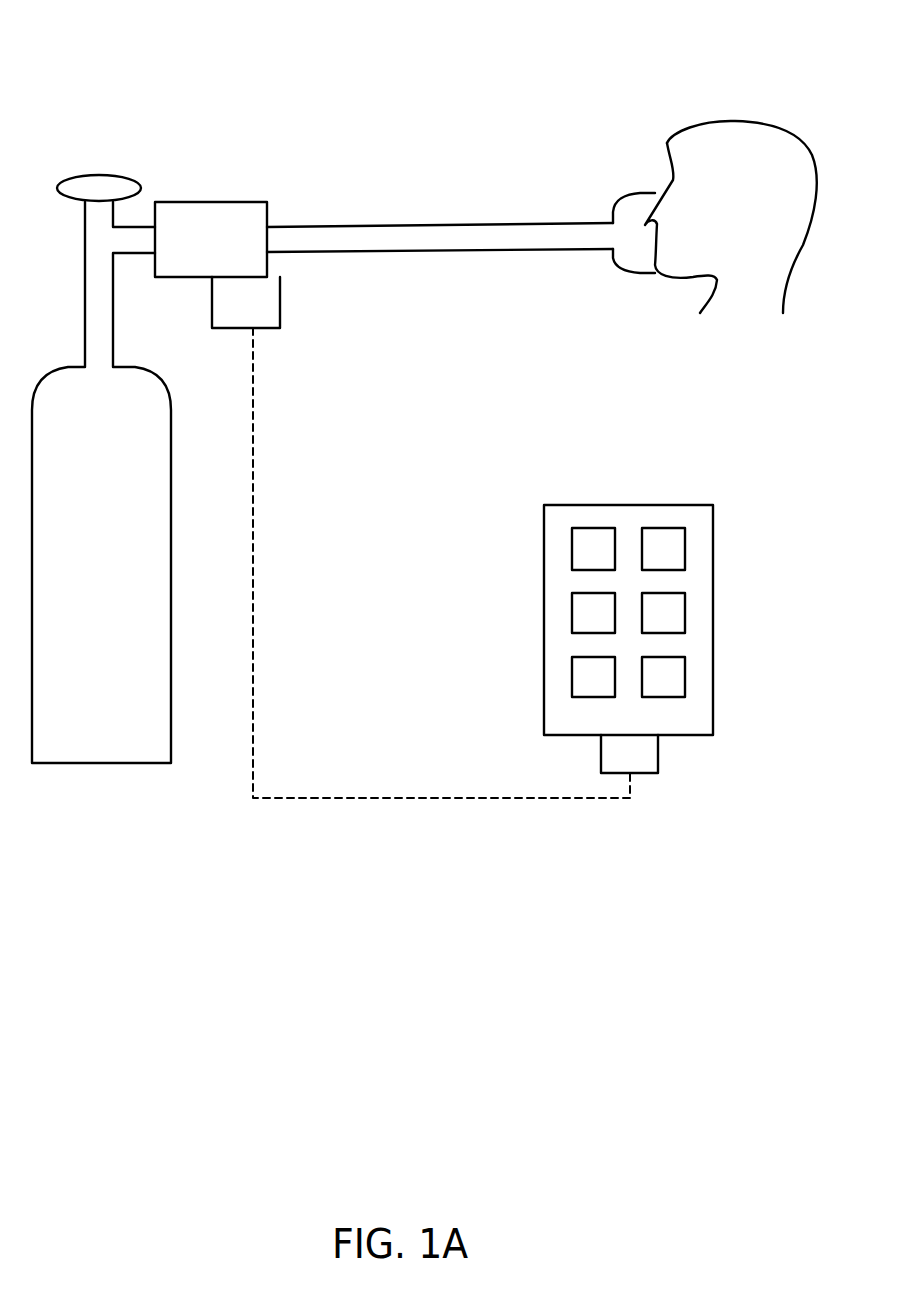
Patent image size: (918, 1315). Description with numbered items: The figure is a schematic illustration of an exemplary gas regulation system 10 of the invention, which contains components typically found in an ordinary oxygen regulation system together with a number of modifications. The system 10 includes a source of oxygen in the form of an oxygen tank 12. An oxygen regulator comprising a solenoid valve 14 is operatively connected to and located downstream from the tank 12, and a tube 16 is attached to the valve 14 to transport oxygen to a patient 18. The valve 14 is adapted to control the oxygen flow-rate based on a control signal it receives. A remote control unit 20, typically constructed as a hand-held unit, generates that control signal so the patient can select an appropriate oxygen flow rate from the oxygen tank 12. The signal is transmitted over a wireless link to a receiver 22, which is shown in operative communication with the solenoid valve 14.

The system 10 is at (212, 88).
The oxygen tank 12 is at (122, 590).
The solenoid valve 14 is at (218, 252).
The tube 16 is at (437, 224).
The patient 18 is at (760, 224).
The remote control unit 20 is at (725, 555).
The receiver 22 is at (267, 317).